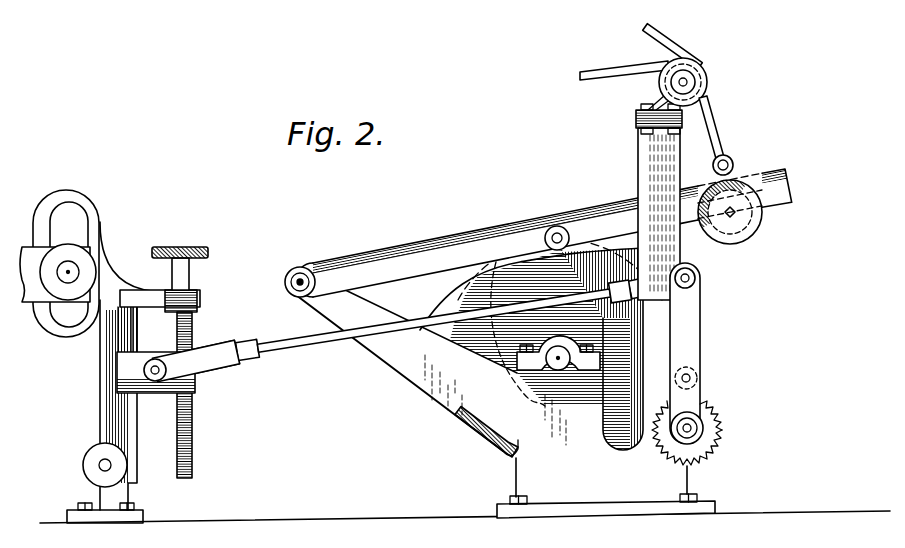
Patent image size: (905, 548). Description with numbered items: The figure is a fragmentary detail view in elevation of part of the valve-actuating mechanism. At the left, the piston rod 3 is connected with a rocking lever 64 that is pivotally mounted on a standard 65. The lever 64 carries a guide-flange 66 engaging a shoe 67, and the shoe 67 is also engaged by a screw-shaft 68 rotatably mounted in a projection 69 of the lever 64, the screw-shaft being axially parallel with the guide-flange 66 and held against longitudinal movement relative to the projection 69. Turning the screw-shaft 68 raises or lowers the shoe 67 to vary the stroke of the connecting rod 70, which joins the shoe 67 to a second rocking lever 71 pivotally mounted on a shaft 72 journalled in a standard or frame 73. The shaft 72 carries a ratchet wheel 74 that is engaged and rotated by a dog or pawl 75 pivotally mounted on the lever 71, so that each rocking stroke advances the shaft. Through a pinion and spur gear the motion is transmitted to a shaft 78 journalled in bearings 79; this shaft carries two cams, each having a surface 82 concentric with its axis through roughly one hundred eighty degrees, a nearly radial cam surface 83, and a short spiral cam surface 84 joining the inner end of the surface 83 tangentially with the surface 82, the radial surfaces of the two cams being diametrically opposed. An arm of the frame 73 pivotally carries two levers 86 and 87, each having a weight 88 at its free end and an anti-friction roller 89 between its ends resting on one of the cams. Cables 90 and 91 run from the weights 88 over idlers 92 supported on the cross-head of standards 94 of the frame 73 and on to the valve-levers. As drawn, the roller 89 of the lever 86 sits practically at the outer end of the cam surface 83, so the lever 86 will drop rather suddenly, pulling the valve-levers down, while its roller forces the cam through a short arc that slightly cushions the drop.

The piston rod 3 is at (30, 303).
The rocking lever 64 is at (103, 322).
The standard 65 is at (97, 490).
The guide-flange 66 is at (133, 412).
The shoe 67 is at (127, 375).
The screw-shaft 68 is at (190, 446).
The projection 69 is at (200, 298).
The connecting rod 70 is at (326, 342).
The rocking lever 71 is at (697, 311).
The shaft 72 is at (698, 427).
The standard or frame 73 is at (540, 488).
The ratchet wheel 74 is at (723, 446).
The dog or pawl 75 is at (700, 388).
The shaft 78 is at (557, 356).
The bearings 79 is at (567, 378).
The concentric surface 82 is at (474, 430).
The cam surface 83 is at (613, 282).
The cam surface 84 is at (623, 363).
The lever 86 is at (428, 253).
The lever 87 is at (468, 247).
The weight 88 is at (745, 195).
The anti-friction roller 89 is at (561, 226).
The cable 90 is at (591, 72).
The cable 91 is at (667, 38).
The idlers 92 is at (696, 72).
The standards 94 is at (640, 165).